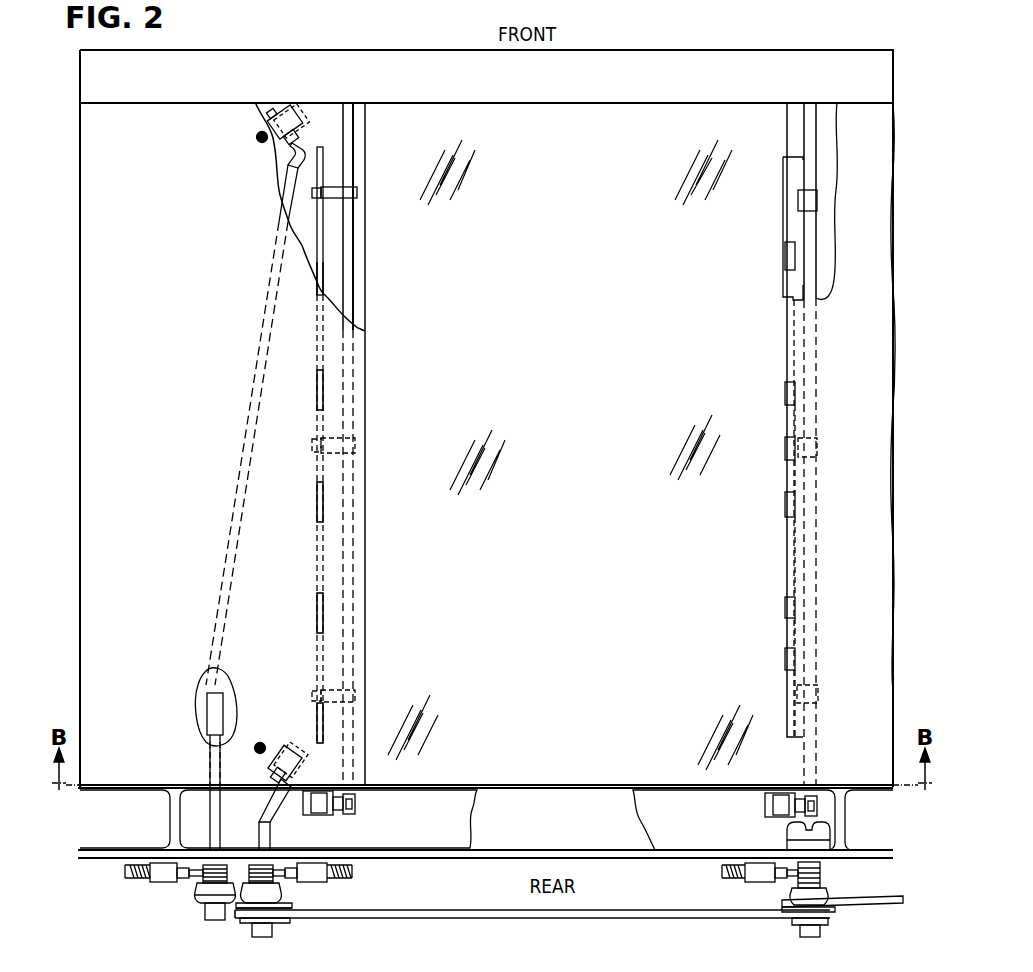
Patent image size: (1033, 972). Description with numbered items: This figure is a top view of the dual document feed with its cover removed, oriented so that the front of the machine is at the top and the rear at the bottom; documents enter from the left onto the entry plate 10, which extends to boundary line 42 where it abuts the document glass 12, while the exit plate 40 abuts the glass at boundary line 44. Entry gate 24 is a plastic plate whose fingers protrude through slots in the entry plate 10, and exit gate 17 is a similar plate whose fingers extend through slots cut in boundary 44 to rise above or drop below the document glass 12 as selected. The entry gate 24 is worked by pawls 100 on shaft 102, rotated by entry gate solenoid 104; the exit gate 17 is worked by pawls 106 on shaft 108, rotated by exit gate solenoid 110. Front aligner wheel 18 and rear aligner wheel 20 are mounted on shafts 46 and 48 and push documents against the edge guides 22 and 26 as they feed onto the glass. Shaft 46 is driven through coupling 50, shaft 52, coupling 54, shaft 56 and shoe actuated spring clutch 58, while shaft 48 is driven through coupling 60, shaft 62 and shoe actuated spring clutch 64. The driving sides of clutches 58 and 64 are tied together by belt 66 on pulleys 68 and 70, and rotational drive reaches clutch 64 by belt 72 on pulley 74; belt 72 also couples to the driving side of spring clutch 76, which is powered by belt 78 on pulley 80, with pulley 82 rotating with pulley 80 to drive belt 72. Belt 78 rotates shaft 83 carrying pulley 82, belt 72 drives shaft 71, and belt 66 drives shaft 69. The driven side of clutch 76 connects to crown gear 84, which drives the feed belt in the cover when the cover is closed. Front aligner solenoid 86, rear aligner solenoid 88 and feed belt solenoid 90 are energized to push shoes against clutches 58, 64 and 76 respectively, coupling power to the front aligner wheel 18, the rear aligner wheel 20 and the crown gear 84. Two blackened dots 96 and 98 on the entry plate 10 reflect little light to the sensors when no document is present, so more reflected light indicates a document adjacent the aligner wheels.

The entry plate 10 is at (165, 470).
The document glass 12 is at (610, 427).
The exit gate 17 is at (785, 268).
The front aligner wheel 18 is at (290, 112).
The rear aligner wheel 20 is at (287, 752).
The edge guide 22 is at (134, 102).
The entry gate 24 is at (322, 167).
The edge guide 26 is at (115, 795).
The exit plate 40 is at (863, 527).
The boundary line 42 is at (366, 510).
The boundary line 44 is at (787, 558).
The shaft 46 is at (298, 136).
The shaft 48 is at (272, 776).
The coupling 50 is at (294, 153).
The shaft 52 is at (272, 320).
The coupling 54 is at (212, 706).
The shaft 56 is at (210, 763).
The shoe actuated spring clutch 58 is at (210, 862).
The coupling 60 is at (268, 800).
The shaft 62 is at (260, 836).
The shoe actuated spring clutch 64 is at (267, 862).
The belt 66 is at (246, 905).
The pulley 68 is at (200, 897).
The shaft 69 is at (212, 920).
The pulley 70 is at (283, 903).
The shaft 71 is at (264, 937).
The belt 72 is at (405, 912).
The pulley 74 is at (285, 922).
The shoe actuated spring clutch 76 is at (822, 876).
The belt 78 is at (884, 904).
The pulley 80 is at (832, 910).
The pulley 82 is at (795, 923).
The shaft 83 is at (816, 937).
The crown gear 84 is at (790, 835).
The front aligner solenoid 86 is at (162, 874).
The rear aligner solenoid 88 is at (352, 874).
The feed belt solenoid 90 is at (722, 878).
The blackened dot 96 is at (260, 743).
The blackened dot 98 is at (257, 135).
The pawl 100 is at (335, 197).
The shaft 102 is at (352, 258).
The entry gate solenoid 104 is at (328, 810).
The pawl 106 is at (810, 201).
The shaft 108 is at (810, 283).
The exit gate solenoid 110 is at (768, 809).